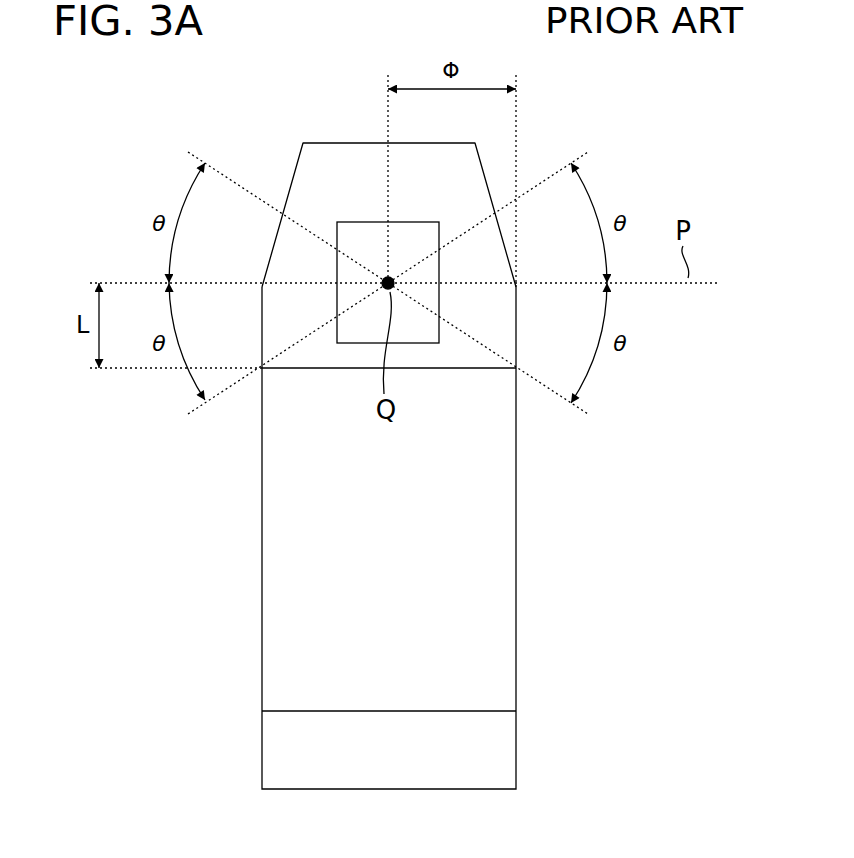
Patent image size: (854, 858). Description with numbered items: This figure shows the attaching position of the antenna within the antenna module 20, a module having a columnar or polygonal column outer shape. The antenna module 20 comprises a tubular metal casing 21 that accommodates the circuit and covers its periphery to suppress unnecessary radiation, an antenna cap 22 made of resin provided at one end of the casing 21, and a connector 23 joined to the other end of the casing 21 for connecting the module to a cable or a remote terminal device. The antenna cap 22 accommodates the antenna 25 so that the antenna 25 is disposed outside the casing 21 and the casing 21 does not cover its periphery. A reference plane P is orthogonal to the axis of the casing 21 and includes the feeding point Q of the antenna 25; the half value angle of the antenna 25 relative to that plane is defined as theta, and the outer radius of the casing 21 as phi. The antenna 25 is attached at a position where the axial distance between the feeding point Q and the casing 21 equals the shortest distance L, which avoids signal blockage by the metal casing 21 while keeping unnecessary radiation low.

The antenna module 20 is at (308, 433).
The casing 21 is at (262, 504).
The antenna cap 22 is at (328, 143).
The connector 23 is at (262, 754).
The antenna 25 is at (353, 222).